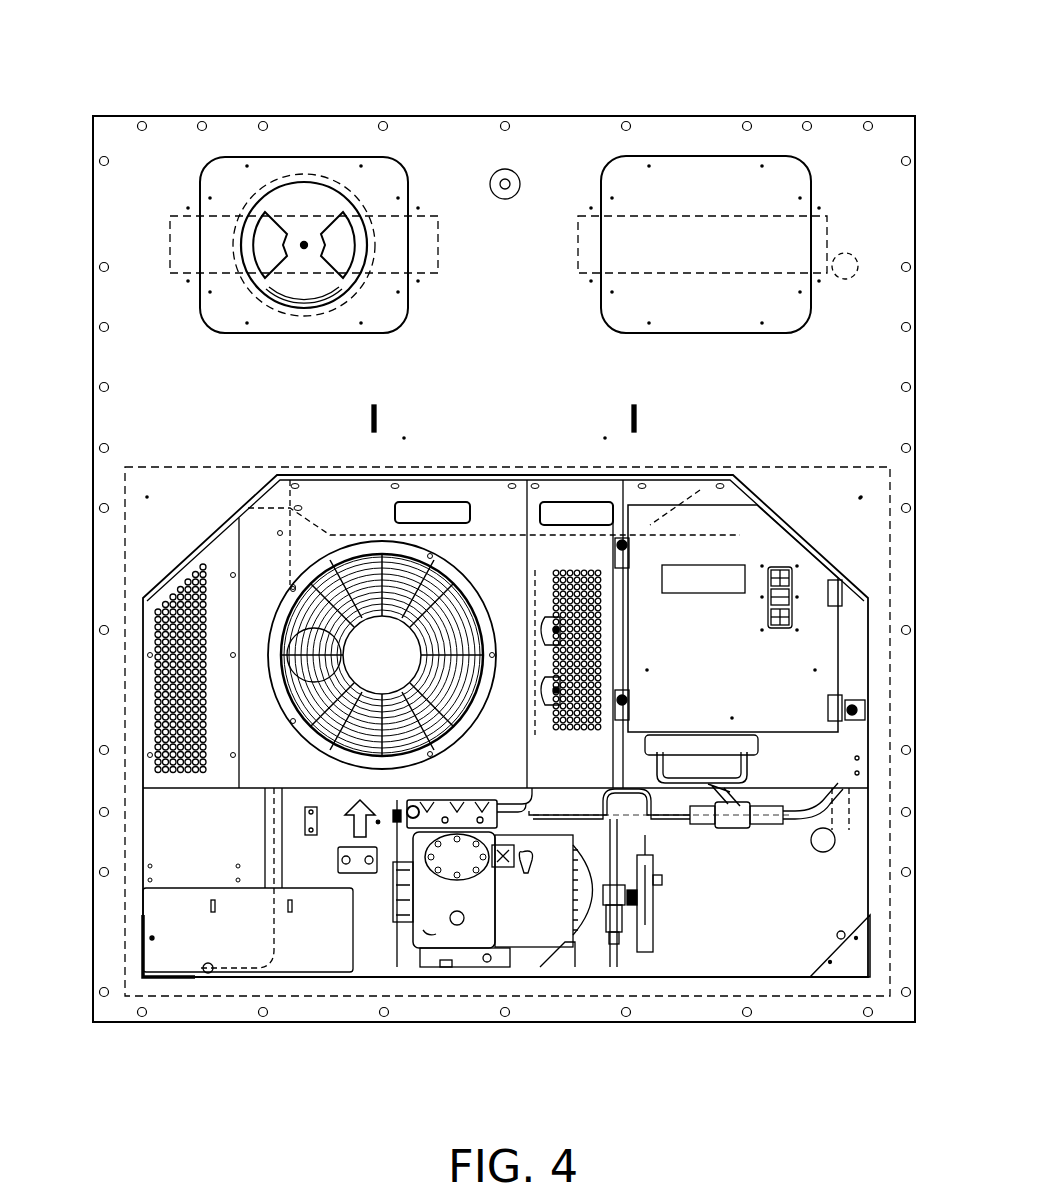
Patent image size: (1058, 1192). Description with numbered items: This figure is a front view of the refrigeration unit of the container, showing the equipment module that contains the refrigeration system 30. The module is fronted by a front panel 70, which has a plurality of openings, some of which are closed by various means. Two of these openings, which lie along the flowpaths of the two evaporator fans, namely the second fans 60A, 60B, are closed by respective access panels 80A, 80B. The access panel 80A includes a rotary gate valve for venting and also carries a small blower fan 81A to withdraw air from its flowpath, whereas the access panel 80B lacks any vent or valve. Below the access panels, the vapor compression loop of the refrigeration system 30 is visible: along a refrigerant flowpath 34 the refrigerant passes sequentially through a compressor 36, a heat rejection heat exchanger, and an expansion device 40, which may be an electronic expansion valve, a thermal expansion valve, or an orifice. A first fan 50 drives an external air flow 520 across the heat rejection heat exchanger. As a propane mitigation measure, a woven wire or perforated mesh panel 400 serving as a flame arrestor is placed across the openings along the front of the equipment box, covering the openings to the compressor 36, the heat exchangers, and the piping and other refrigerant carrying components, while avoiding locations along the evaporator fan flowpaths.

The refrigeration system 30 is at (754, 952).
The refrigerant flowpath 34 is at (670, 840).
The compressor 36 is at (521, 915).
The expansion device 40 is at (860, 267).
The first fan 50 is at (297, 712).
The second fan 60A is at (432, 216).
The second fan 60B is at (580, 216).
The front panel 70 is at (178, 430).
The access panel 80A is at (228, 304).
The access panel 80B is at (733, 192).
The blower fan 81A is at (310, 176).
The mesh panel 400 is at (840, 462).
The external air flow 520 is at (352, 828).